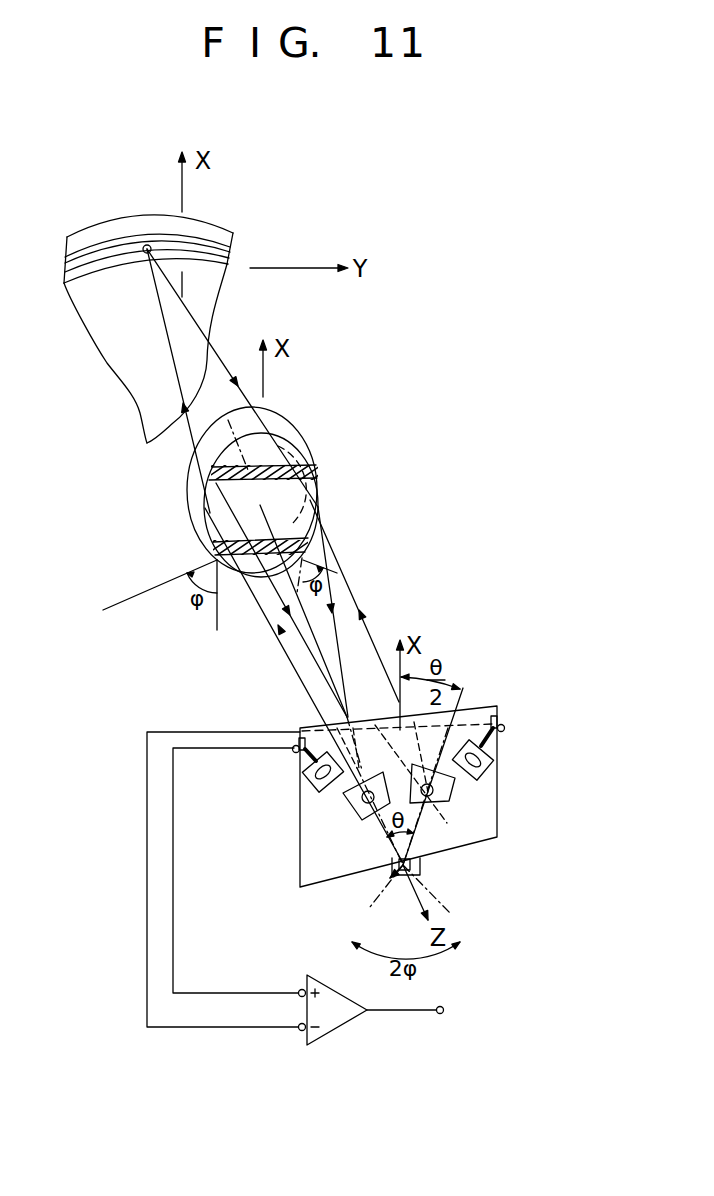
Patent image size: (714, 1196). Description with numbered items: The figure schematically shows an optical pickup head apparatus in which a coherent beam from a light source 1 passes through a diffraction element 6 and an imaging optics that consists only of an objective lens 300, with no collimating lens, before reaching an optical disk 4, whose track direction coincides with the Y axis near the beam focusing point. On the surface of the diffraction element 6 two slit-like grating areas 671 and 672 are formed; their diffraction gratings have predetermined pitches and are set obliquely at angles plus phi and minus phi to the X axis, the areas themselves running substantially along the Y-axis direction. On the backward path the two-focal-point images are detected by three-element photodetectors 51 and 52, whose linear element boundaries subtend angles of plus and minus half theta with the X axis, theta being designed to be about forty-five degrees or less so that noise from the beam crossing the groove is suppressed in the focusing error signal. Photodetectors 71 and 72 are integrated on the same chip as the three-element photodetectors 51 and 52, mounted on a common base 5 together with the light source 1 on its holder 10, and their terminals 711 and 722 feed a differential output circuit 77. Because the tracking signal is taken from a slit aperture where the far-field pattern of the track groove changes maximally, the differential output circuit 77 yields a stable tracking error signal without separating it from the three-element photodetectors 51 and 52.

The light source 1 is at (425, 863).
The optical disk 4 is at (220, 237).
The base plate 5 is at (487, 840).
The diffraction element 6 is at (320, 487).
The laser holder 10 is at (402, 877).
The three-element photodetector 51 is at (343, 815).
The three-element photodetector 52 is at (445, 793).
The photodetector 71 is at (317, 783).
The photodetector 72 is at (480, 779).
The differential output circuit 77 is at (448, 1010).
The objective lens 300 is at (286, 418).
The slit-like grating area 671 is at (213, 481).
The slit-like grating area 672 is at (307, 547).
The terminal of first light receiving element 711 is at (289, 756).
The terminal of second light receiving element 722 is at (504, 725).